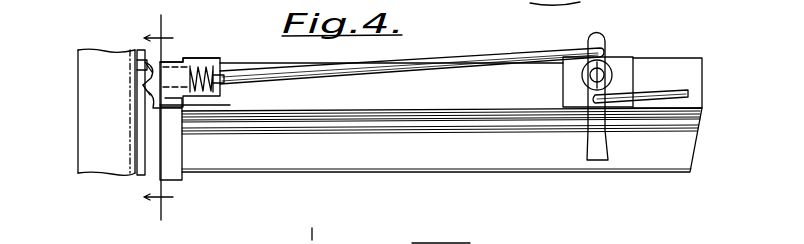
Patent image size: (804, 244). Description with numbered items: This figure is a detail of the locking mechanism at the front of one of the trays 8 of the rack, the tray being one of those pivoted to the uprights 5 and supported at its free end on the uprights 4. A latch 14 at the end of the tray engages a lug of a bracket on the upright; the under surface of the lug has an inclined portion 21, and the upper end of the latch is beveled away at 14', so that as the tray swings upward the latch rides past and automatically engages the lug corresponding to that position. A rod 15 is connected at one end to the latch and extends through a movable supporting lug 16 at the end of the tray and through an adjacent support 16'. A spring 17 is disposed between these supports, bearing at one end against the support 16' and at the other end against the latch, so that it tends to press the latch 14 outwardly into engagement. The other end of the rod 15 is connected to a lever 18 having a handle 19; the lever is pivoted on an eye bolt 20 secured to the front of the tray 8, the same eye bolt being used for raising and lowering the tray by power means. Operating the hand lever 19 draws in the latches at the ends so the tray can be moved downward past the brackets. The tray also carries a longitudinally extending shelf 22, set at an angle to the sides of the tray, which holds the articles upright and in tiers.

The upright 4 is at (85, 95).
The upright 5 is at (158, 117).
The tray 8 is at (697, 67).
The latch 14 is at (186, 68).
The beveled upper end of latch 14' is at (86, 70).
The rod 15 is at (345, 100).
The movable supporting lug 16 is at (215, 45).
The support 16' is at (241, 89).
The spring 17 is at (200, 72).
The lever 18 is at (607, 87).
The handle 19 is at (608, 158).
The eye bolt 20 is at (585, 78).
The inclined portion 21 is at (153, 111).
The shelf 22 is at (378, 128).